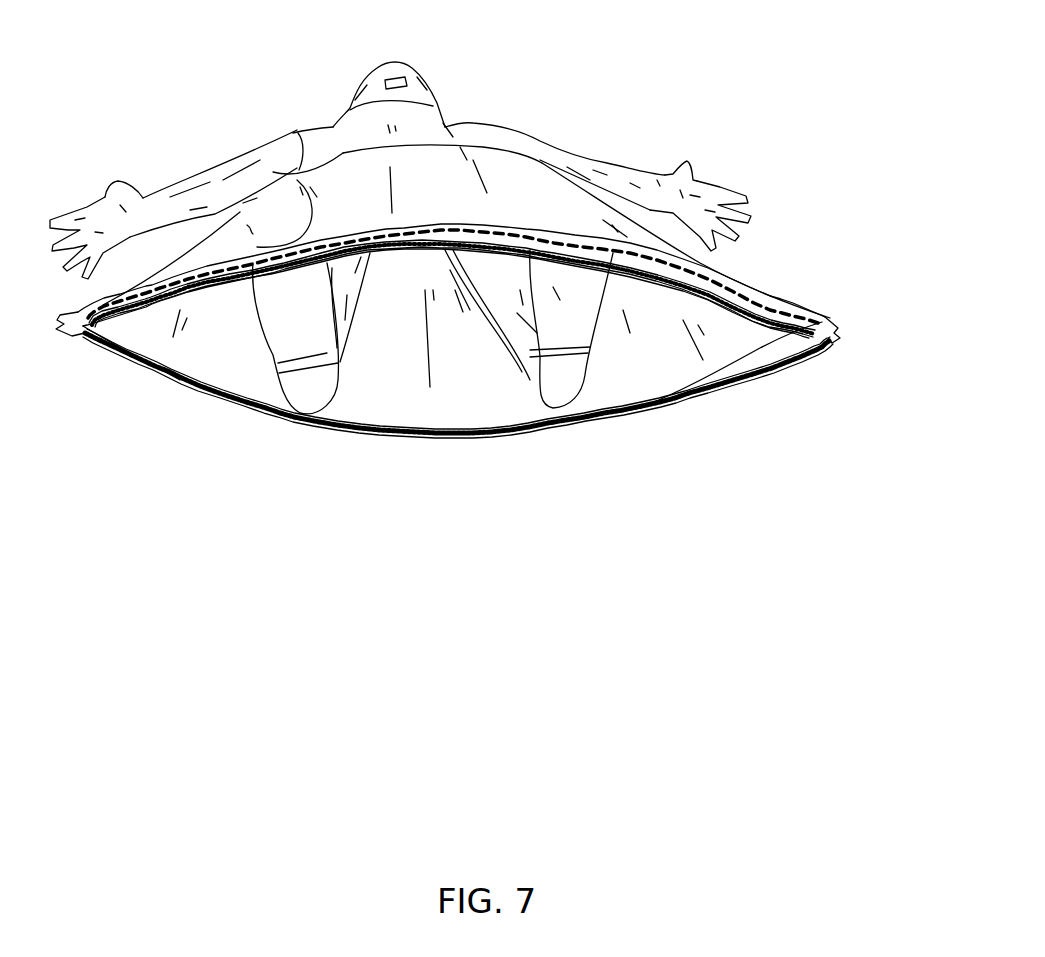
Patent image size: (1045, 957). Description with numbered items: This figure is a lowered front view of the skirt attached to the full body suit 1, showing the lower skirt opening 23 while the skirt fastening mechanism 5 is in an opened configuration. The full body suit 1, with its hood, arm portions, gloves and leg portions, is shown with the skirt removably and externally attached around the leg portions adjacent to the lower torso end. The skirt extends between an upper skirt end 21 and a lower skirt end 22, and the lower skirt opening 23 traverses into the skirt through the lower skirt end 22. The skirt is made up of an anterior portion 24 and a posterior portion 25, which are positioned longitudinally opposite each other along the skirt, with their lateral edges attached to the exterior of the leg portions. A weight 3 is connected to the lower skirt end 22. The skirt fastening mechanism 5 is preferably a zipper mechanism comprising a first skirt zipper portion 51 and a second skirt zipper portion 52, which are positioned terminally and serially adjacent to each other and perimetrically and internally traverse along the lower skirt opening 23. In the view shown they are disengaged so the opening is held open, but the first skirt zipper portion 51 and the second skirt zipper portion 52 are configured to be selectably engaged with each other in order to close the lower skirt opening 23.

The full body suit 1 is at (452, 40).
The upper skirt end 21 is at (427, 127).
The lower skirt end 22 is at (895, 322).
The lower skirt opening 23 is at (467, 383).
The anterior portion 24 is at (298, 133).
The posterior portion 25 is at (411, 323).
The weight 3 is at (540, 238).
The skirt fastening mechanism 5 is at (673, 443).
The first skirt zipper portion 51 is at (673, 289).
The second skirt zipper portion 52 is at (623, 407).